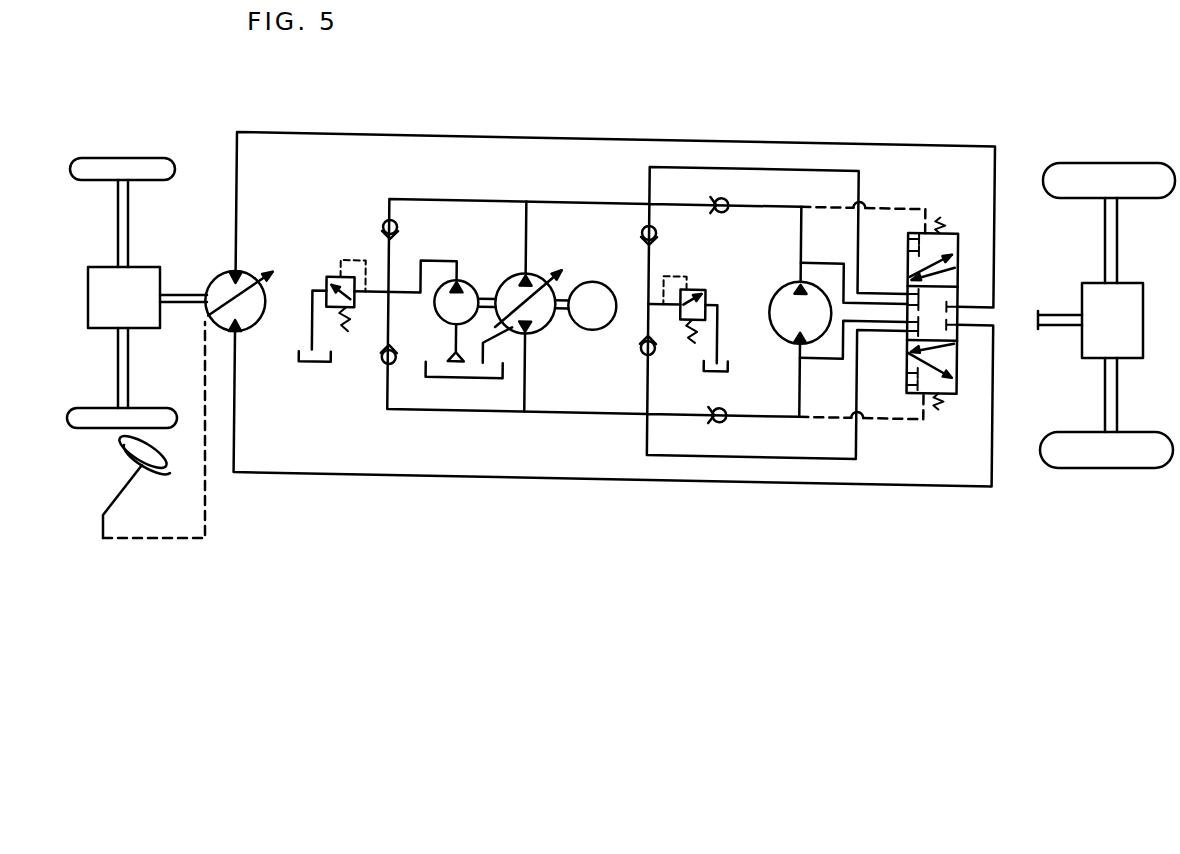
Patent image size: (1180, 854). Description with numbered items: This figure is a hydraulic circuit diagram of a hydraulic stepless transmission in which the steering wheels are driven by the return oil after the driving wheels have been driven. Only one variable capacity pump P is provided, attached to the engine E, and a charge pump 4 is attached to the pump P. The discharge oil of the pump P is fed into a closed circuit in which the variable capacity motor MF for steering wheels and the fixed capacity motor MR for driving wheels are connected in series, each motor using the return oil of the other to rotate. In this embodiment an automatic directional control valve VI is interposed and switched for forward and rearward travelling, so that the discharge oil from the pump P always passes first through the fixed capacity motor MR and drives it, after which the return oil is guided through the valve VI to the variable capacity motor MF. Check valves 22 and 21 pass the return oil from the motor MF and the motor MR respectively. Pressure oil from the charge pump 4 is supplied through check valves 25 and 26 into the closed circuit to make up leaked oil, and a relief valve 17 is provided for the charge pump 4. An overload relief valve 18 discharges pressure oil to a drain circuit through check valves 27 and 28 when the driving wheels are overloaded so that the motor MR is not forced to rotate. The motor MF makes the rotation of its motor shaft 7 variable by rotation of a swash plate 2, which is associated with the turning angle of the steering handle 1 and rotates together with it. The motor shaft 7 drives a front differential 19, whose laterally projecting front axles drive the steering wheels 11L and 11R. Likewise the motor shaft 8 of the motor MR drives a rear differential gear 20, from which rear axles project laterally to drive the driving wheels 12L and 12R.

The steering handle 1 is at (167, 465).
The swash plate 2 is at (243, 294).
The charge pump 4 is at (466, 276).
The motor shaft 7 is at (192, 309).
The motor shaft 8 is at (1058, 330).
The steering wheel 11R is at (155, 158).
The steering wheel 11L is at (157, 408).
The driving wheel 12R is at (1098, 163).
The driving wheel 12L is at (1090, 470).
The relief valve 17 is at (334, 274).
The overload relief valve 18 is at (711, 278).
The front differential 19 is at (124, 297).
The rear differential gear 20 is at (1112, 320).
The check valve 21 is at (713, 189).
The check valve 22 is at (716, 413).
The check valve 25 is at (401, 223).
The check valve 26 is at (385, 355).
The check valve 27 is at (658, 222).
The check valve 28 is at (659, 345).
The variable capacity motor for steering wheels MF is at (260, 322).
The fixed capacity motor for driving wheels MR is at (773, 327).
The variable capacity pump P is at (554, 321).
The engine E is at (592, 307).
The automatic directional control valve VI is at (933, 190).